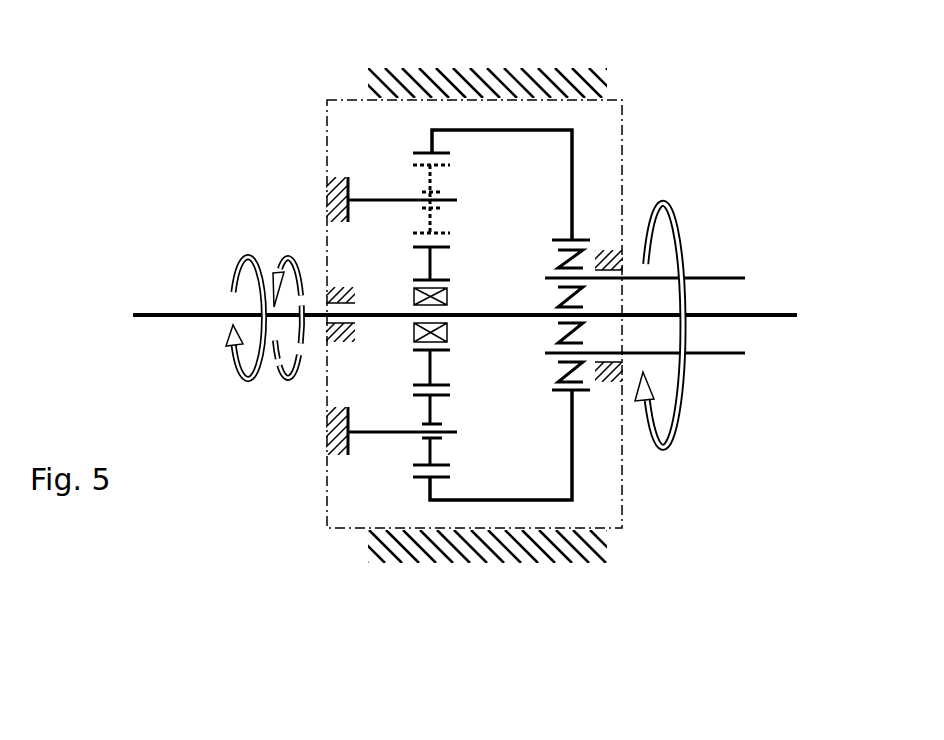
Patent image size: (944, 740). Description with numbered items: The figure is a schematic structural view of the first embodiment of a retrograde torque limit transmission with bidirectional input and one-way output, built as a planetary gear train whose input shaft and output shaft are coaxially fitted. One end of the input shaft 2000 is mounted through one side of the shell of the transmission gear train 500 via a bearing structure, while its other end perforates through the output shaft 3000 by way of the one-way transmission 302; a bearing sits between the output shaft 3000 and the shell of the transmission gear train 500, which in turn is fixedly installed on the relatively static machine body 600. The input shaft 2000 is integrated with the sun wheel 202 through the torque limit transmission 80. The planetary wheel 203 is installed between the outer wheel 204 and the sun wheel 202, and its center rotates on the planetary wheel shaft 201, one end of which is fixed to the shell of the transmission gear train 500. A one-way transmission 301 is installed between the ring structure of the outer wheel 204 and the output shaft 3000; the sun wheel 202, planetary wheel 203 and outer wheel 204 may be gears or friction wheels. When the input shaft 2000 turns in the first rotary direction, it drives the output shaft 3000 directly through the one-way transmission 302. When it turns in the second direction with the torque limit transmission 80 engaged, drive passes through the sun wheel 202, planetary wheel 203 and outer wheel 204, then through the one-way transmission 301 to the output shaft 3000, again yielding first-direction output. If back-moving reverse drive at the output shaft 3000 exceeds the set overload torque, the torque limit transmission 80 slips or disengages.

The machine body 600 is at (497, 87).
The shell of the transmission gear train 500 is at (323, 145).
The planetary wheel 203 is at (417, 165).
The sun wheel 202 is at (450, 246).
The torque limit transmission 80 is at (415, 291).
The planetary wheel shaft 201 is at (448, 433).
The outer wheel 204 is at (413, 470).
The one-way transmission 301 is at (560, 260).
The one-way transmission 302 is at (560, 332).
The input shaft 2000 is at (218, 312).
The output shaft 3000 is at (713, 277).